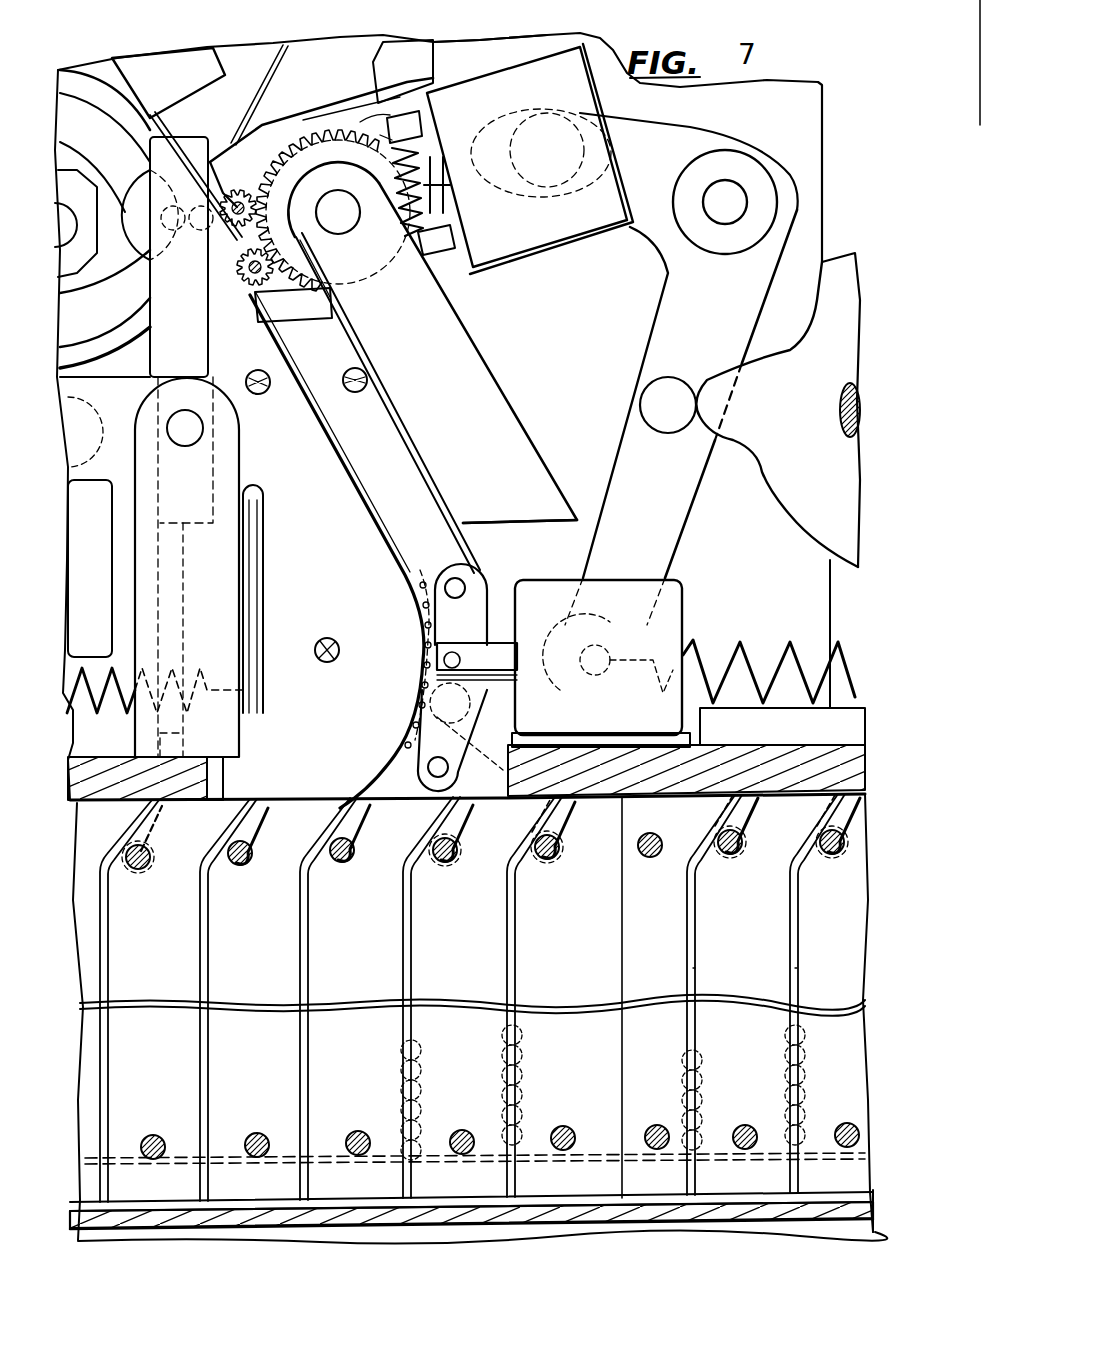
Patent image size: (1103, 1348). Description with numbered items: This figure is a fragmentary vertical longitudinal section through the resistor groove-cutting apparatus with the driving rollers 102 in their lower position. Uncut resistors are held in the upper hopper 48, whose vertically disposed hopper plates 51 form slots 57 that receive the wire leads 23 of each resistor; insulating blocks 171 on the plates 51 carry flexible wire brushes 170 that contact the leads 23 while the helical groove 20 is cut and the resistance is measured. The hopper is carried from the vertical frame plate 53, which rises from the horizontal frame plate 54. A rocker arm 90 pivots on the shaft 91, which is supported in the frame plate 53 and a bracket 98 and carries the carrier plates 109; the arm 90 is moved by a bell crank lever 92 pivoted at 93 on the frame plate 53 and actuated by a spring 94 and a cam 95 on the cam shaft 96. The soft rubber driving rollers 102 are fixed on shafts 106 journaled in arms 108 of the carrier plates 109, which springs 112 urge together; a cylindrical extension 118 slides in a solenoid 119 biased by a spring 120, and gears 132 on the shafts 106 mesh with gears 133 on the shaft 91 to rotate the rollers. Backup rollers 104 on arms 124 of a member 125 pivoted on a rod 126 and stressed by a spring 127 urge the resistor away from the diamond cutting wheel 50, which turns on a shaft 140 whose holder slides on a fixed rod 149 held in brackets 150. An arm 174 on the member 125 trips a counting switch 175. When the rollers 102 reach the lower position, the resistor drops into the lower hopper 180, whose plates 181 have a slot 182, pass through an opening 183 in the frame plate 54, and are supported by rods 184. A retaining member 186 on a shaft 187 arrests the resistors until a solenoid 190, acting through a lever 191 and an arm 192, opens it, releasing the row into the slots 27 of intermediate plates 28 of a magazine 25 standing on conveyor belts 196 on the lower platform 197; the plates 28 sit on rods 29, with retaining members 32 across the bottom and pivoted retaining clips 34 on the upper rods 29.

The helical groove 20 is at (405, 696).
The wire leads 23 is at (410, 619).
The magazine 25 is at (623, 983).
The slots 27 is at (793, 970).
The intermediate plates 28 is at (280, 888).
The rods 29 is at (253, 869).
The retaining members 32 is at (283, 1164).
The retaining clips 34 is at (358, 879).
The upper hopper 48 is at (438, 63).
The diamond cutting wheel 50 is at (87, 87).
The hopper plates 51 is at (250, 61).
The vertical frame plate 53 is at (793, 122).
The horizontal frame plate 54 is at (165, 778).
The slots 57 is at (262, 98).
The rocker arm 90 is at (457, 84).
The shaft 91 is at (380, 135).
The bell crank lever 92 is at (680, 301).
The pivot 93 is at (726, 193).
The spring 94 is at (750, 661).
The cam 95 is at (785, 483).
The cam shaft 96 is at (843, 414).
The bracket 98 is at (517, 464).
The driving rollers 102 is at (252, 196).
The backup rollers 104 is at (133, 184).
The shafts 106 is at (253, 160).
The arms 108 is at (320, 138).
The carrier plates 109 is at (377, 135).
The springs 112 is at (413, 166).
The cylindrical extension 118 is at (450, 184).
The solenoid 119 is at (560, 223).
The spring 120 is at (450, 178).
The arms 124 is at (147, 286).
The member 125 is at (240, 459).
The rod 126 is at (193, 431).
The spring 127 is at (106, 714).
The gears 132 is at (313, 130).
The gears 133 is at (360, 122).
The shaft 140 is at (73, 152).
The fixed rod 149 is at (100, 319).
The brackets 150 is at (112, 391).
The wire brushes 170 is at (185, 132).
The insulating blocks 171 is at (155, 58).
The arm 174 is at (252, 567).
The switch 175 is at (97, 605).
The lower hopper 180 is at (403, 418).
The lower hopper plates 181 is at (380, 453).
The slot 182 is at (368, 496).
The opening 183 is at (220, 771).
The rods 184 is at (260, 396).
The retaining member 186 is at (435, 778).
The shaft 187 is at (480, 706).
The solenoid 190 is at (670, 608).
The lever 191 is at (497, 601).
The arm 192 is at (463, 734).
The conveyor belts 196 is at (540, 1210).
The lower platform 197 is at (638, 1200).